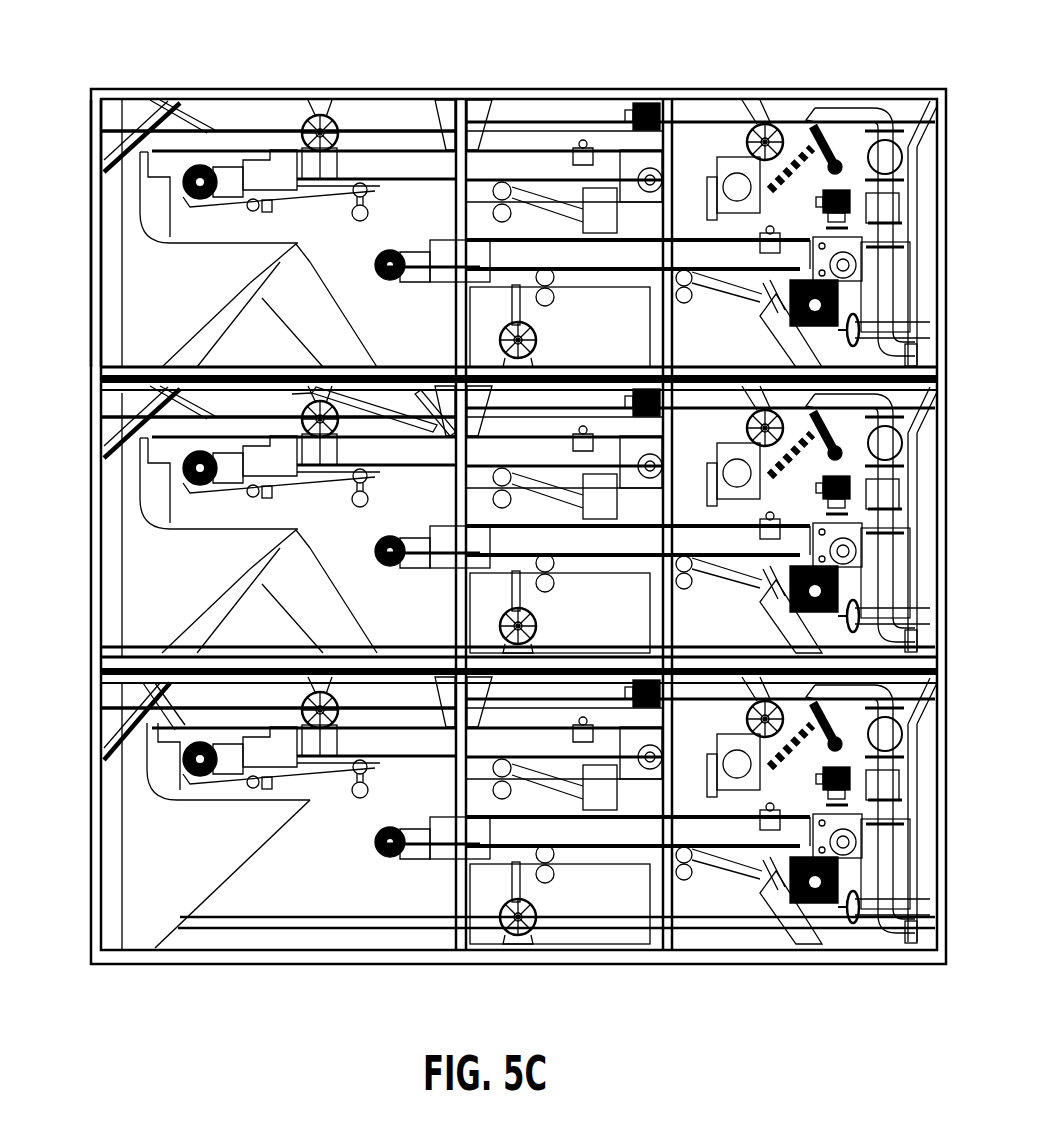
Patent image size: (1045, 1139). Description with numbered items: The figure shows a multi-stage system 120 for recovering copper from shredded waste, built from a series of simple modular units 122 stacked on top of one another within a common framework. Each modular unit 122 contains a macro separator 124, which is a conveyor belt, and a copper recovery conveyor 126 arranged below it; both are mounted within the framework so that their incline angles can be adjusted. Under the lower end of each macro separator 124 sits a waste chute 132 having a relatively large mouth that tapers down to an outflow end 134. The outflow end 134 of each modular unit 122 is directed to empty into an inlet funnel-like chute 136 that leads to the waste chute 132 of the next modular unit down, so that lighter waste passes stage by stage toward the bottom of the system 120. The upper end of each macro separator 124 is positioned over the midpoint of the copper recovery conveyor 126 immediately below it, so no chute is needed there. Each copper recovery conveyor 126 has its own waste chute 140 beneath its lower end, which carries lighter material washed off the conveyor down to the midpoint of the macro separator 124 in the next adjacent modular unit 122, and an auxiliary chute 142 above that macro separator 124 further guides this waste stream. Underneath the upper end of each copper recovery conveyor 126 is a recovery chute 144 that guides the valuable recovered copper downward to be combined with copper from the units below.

The multi-stage system 120 is at (162, 64).
The modular unit 122 is at (86, 100).
The macro separator 124 is at (383, 128).
The copper recovery conveyor 126 is at (592, 286).
The waste chute 132 is at (140, 590).
The outflow end 134 is at (130, 645).
The inlet funnel-like chute 136 is at (115, 697).
The waste chute 140 is at (322, 307).
The auxiliary chute 142 is at (390, 402).
The recovery chute 144 is at (774, 611).